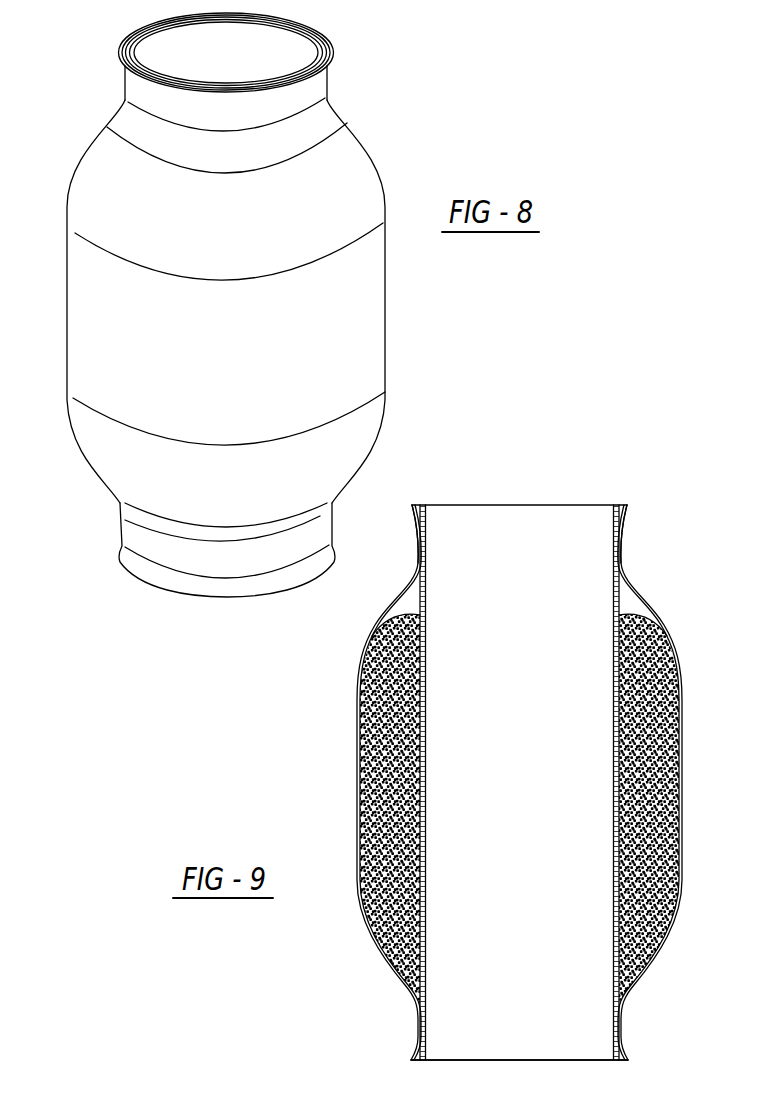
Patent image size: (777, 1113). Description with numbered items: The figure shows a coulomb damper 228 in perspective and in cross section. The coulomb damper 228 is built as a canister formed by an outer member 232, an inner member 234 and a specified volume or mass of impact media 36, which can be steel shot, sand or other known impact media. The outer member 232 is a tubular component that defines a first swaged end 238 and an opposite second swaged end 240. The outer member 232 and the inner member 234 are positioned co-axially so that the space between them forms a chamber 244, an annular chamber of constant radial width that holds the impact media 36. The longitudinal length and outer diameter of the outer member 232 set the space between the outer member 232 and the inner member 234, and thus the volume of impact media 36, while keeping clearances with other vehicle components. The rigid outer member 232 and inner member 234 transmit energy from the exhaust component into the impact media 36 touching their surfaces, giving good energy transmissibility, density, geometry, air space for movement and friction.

In FIG. 8, the coulomb damper 228 is at (462, 115).
In FIG. 9, the coulomb damper 228 is at (327, 794).
In FIG. 8, the outer member 232 is at (78, 303).
In FIG. 9, the outer member 232 is at (365, 938).
In FIG. 8, the inner member 234 is at (170, 55).
In FIG. 9, the inner member 234 is at (425, 892).
In FIG. 8, the first swaged end 238 is at (123, 530).
In FIG. 9, the first swaged end 238 is at (412, 1025).
In FIG. 8, the second swaged end 240 is at (307, 93).
In FIG. 9, the second swaged end 240 is at (627, 540).
In FIG. 9, the chamber 244 is at (403, 722).
In FIG. 9, the impact media 36 is at (638, 757).